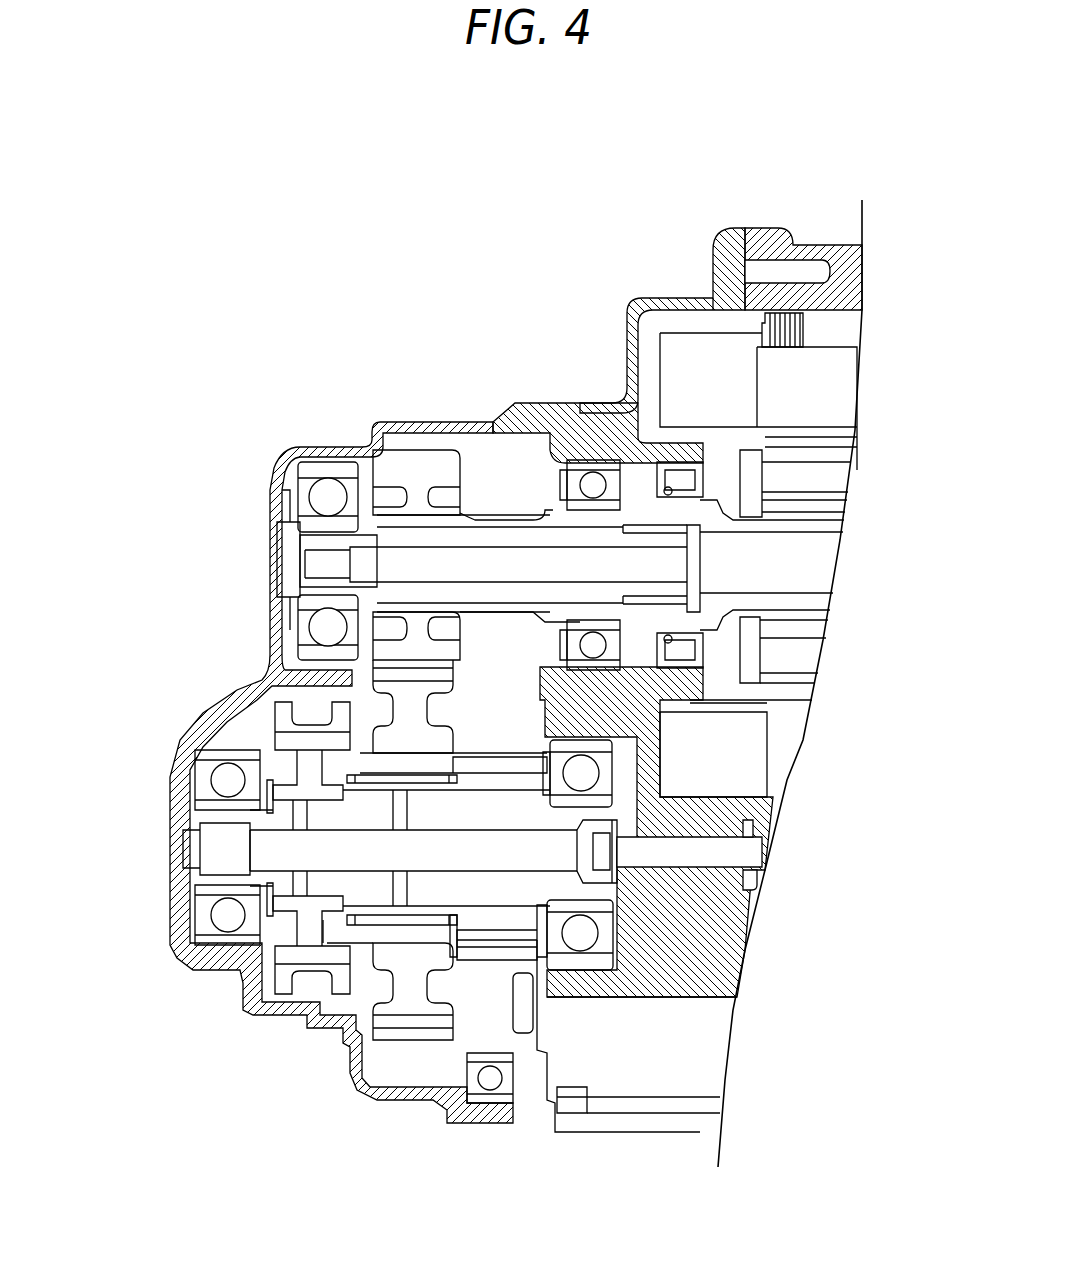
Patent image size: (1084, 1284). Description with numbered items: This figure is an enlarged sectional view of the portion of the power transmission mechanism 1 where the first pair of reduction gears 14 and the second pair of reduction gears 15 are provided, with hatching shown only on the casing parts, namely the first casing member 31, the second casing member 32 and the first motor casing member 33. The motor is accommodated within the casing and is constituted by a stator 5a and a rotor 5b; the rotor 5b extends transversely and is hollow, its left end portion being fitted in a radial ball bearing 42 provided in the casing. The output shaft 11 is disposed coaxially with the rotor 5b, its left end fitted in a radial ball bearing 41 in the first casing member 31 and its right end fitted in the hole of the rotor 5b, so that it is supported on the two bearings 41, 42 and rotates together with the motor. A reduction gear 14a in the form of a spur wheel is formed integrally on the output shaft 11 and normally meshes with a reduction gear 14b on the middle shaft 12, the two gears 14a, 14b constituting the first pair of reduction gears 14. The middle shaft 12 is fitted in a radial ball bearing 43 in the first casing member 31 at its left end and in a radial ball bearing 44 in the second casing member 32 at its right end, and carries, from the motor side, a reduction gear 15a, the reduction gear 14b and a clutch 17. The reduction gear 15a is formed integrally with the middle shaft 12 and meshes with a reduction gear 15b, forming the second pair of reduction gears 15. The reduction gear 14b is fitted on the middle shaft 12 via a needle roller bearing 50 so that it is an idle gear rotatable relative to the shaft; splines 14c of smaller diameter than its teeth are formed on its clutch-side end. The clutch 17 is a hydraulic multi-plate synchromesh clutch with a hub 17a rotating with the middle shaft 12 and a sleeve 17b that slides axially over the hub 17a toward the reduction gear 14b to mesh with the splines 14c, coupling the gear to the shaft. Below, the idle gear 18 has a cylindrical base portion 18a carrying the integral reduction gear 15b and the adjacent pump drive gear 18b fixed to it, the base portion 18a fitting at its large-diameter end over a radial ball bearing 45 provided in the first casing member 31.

The power transmission mechanism 1 is at (588, 200).
The stator 5a is at (845, 378).
The rotor 5b is at (838, 543).
The output shaft 11 is at (493, 513).
The middle shaft 12 is at (205, 848).
The first pair of reduction gears 14 is at (391, 740).
The reduction gear 14a is at (413, 450).
The reduction gear 14b is at (460, 678).
The splines 14c is at (373, 727).
The second pair of reduction gears 15 is at (640, 920).
The reduction gear 15a is at (553, 725).
The reduction gear 15b is at (423, 1107).
The clutch 17 is at (188, 820).
The hub 17a is at (287, 768).
The sleeve 17b is at (277, 740).
The idle gear 18 is at (625, 1079).
The base portion 18a is at (600, 1132).
The pump drive gear 18b is at (567, 1087).
The first casing member 31 is at (318, 445).
The second casing member 32 is at (713, 243).
The first motor casing member 33 is at (800, 245).
The radial ball bearing 41 is at (296, 600).
The radial ball bearing 42 is at (570, 457).
The radial ball bearing 43 is at (198, 780).
The radial ball bearing 44 is at (550, 805).
The radial ball bearing 45 is at (490, 1117).
The needle roller bearing 50 is at (430, 785).